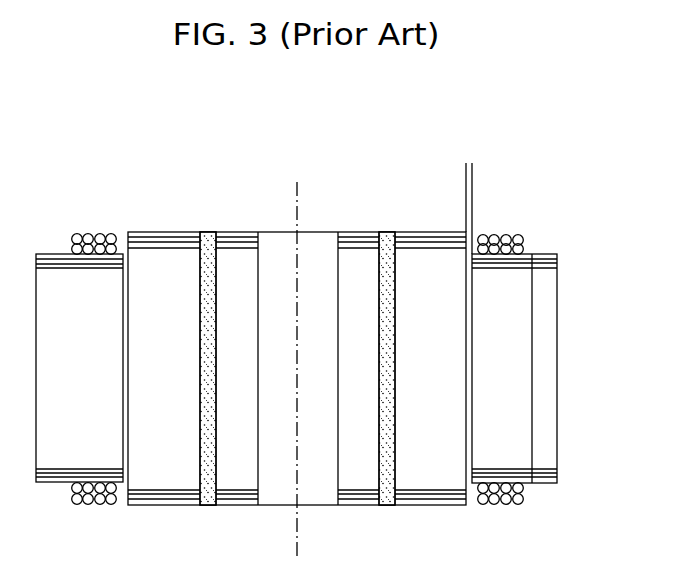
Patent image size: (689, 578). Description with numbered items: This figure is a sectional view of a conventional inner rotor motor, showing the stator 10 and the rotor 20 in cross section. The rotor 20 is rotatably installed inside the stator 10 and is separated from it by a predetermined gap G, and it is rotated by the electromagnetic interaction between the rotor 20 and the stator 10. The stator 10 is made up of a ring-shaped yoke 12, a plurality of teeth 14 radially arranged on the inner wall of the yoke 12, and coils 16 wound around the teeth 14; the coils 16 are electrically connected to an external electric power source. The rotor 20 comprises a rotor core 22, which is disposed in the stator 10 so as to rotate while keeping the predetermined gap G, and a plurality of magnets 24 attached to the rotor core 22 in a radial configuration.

The stator 10 is at (519, 333).
The yoke 12 is at (545, 265).
The teeth 14 is at (483, 268).
The coils 16 is at (517, 240).
The rotor 20 is at (297, 328).
The rotor core 22 is at (167, 237).
The magnets 24 is at (207, 235).
The gap G is at (449, 169).